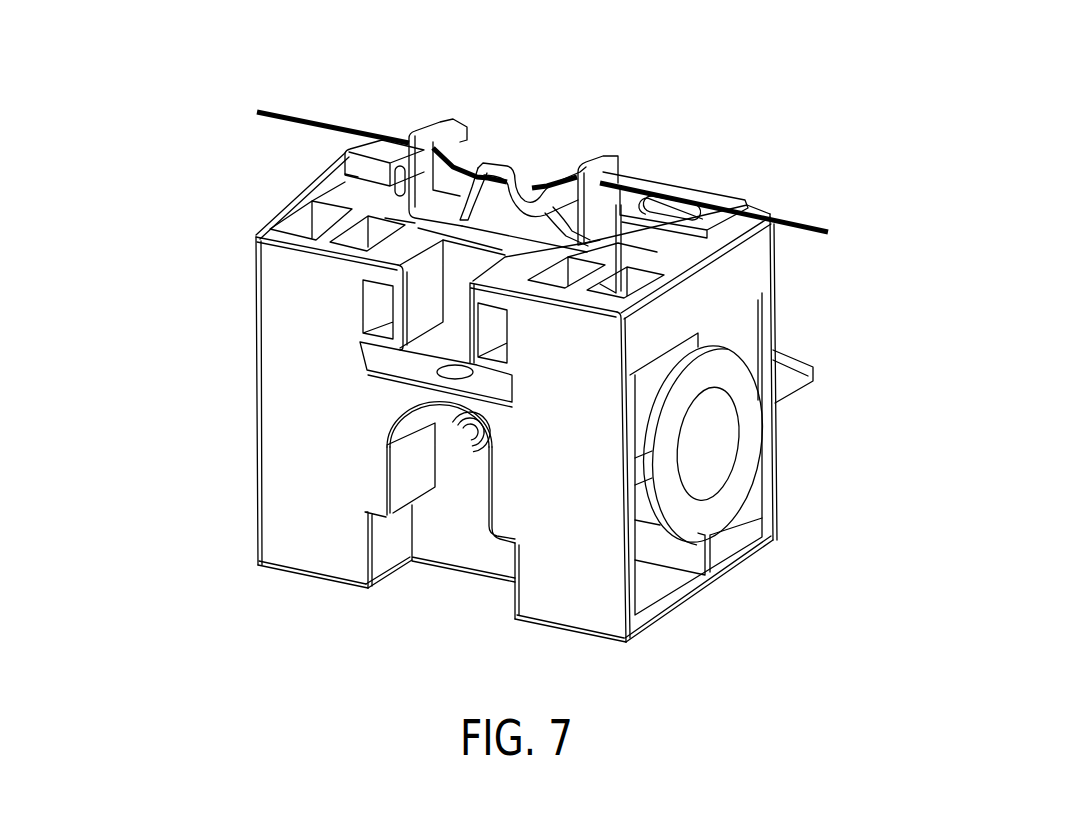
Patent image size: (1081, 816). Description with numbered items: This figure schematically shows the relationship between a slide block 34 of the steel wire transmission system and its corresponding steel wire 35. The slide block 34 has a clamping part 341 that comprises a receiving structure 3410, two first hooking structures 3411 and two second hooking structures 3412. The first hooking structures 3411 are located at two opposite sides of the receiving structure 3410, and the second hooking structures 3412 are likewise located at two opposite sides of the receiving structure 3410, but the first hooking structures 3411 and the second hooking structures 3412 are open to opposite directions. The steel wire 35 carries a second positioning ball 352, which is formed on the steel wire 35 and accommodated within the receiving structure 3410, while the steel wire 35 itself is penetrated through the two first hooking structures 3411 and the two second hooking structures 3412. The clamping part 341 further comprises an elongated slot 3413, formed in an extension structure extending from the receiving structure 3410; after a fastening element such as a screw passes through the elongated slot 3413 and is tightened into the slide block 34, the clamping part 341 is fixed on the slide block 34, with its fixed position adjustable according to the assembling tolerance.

The slide block 34 is at (1050, 117).
The steel wire 35 is at (304, 119).
The clamping part 341 is at (962, 280).
The receiving structure 3410 is at (500, 191).
The first hooking structures 3411 is at (546, 202).
The second hooking structures 3412 is at (607, 190).
The elongated slot 3413 is at (704, 216).
The second positioning ball 352 is at (524, 194).